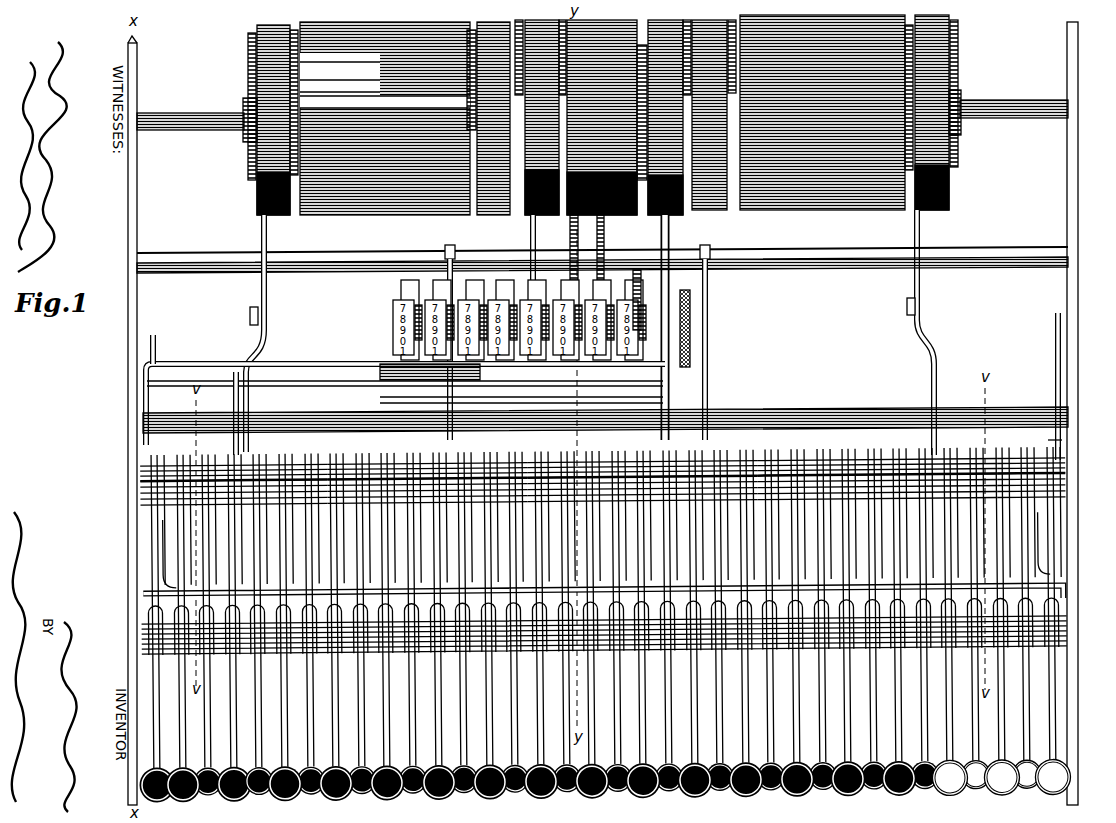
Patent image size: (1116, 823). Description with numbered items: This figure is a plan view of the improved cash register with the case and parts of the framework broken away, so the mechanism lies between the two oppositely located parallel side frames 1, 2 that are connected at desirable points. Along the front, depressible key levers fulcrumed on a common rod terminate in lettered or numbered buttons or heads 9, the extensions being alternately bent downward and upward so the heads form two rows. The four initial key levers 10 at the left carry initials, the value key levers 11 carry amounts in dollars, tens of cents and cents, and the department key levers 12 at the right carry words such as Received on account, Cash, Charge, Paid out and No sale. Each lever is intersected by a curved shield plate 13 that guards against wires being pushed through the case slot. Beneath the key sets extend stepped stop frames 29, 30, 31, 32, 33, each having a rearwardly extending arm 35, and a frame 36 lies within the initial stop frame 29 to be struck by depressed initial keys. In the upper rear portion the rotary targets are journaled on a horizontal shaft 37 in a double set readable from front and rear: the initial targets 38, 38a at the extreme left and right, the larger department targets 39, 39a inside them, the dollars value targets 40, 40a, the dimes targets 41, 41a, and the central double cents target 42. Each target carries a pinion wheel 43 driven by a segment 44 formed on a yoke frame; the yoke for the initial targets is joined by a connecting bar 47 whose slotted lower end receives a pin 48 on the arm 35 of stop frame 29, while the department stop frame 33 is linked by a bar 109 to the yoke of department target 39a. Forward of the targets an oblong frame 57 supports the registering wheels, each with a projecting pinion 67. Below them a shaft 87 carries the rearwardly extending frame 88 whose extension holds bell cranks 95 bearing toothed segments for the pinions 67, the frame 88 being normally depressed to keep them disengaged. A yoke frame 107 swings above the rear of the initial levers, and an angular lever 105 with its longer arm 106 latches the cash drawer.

The side frame 1 is at (127, 306).
The side frame 2 is at (1080, 214).
The key buttons or heads 9 is at (599, 625).
The initial key levers 10 is at (188, 716).
The value key levers 11 is at (408, 722).
The department key levers 12 is at (954, 704).
The curved shield plate 13 is at (143, 600).
The stop frame 29 is at (160, 546).
The stop frame 30 is at (322, 572).
The stop frame 31 is at (525, 572).
The stop frame 32 is at (872, 507).
The stop frame 33 is at (1040, 556).
The rearwardly extending arm 35 is at (268, 338).
The frame 36 is at (168, 558).
The horizontal shaft 37 is at (166, 118).
The initial target 38 is at (247, 40).
The initial target 38a is at (959, 50).
The department target 39 is at (364, 121).
The department target 39a is at (826, 112).
The value target 40 is at (505, 218).
The value target 40a is at (724, 212).
The dimes target 41 is at (550, 218).
The dimes target 41a is at (672, 216).
The central double target 42 is at (608, 218).
The pinion wheel 43 is at (244, 136).
The segment 44 is at (248, 176).
The connecting bar 47 is at (269, 240).
The screw or pin 48 is at (585, 247).
The oblong frame 57 is at (380, 293).
The pinion 67 is at (644, 316).
The shaft 87 is at (830, 412).
The rearwardly extending frame 88 is at (330, 362).
The bell crank 95 is at (528, 244).
The angular lever 105 is at (1062, 446).
The longer arm 106 is at (1055, 364).
The yoke frame 107 is at (214, 442).
The bar 109 is at (922, 238).